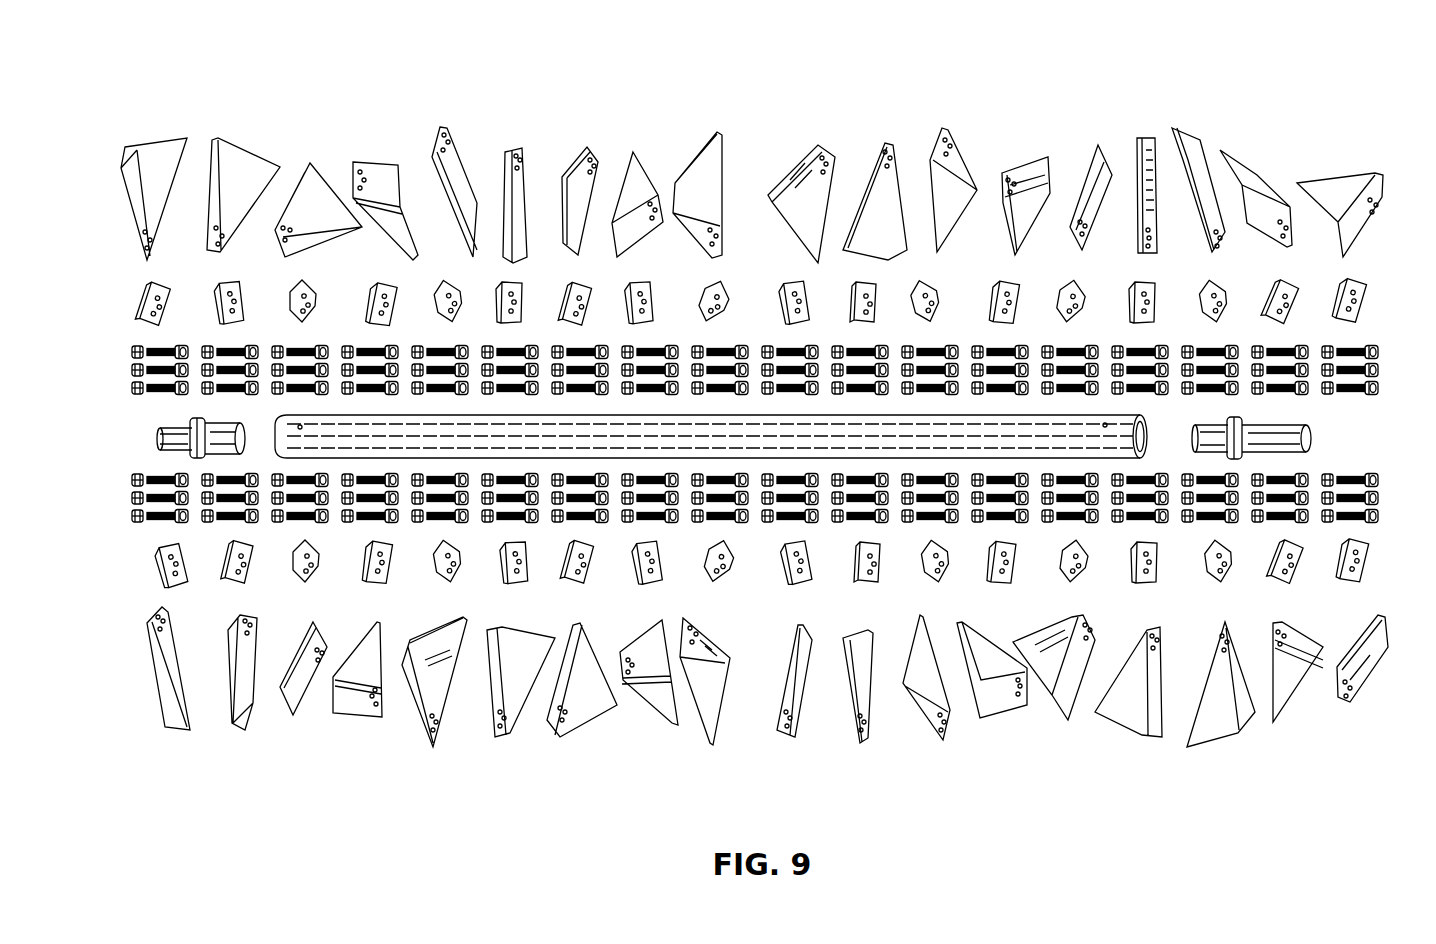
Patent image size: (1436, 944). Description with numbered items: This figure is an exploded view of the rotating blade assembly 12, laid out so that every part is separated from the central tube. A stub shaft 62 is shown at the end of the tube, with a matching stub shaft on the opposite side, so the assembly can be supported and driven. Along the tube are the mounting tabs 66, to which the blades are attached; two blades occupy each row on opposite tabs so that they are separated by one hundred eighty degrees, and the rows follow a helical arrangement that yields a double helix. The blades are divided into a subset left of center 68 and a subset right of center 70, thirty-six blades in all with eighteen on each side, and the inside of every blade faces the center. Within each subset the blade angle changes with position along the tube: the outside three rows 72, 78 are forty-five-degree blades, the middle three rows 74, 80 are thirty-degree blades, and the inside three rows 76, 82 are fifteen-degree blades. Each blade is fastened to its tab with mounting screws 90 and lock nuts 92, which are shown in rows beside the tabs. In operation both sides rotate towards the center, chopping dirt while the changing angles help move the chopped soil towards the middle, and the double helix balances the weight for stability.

The rotating blade assembly 12 is at (1308, 80).
The stub shaft 62 is at (185, 426).
The mounting tab 66 is at (143, 320).
The blades left of center 68 is at (730, 766).
The blades right of center 70 is at (765, 118).
The outside rows of blades 72 is at (328, 118).
The middle rows of blades 74 is at (352, 118).
The inside rows of blades 76 is at (560, 118).
The outside rows of blades 78 is at (1188, 766).
The middle rows of blades 80 is at (965, 766).
The inside rows of blades 82 is at (950, 766).
The mounting screw 90 is at (165, 352).
The lock nut 92 is at (130, 388).